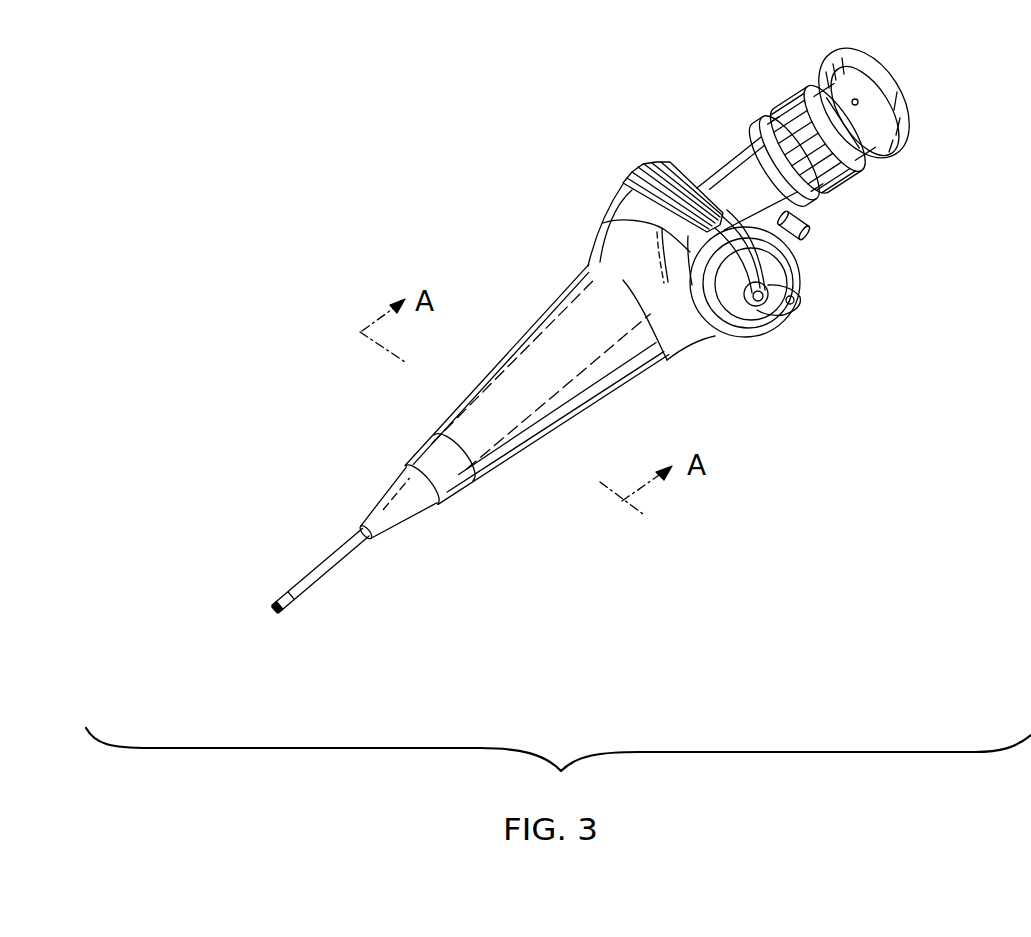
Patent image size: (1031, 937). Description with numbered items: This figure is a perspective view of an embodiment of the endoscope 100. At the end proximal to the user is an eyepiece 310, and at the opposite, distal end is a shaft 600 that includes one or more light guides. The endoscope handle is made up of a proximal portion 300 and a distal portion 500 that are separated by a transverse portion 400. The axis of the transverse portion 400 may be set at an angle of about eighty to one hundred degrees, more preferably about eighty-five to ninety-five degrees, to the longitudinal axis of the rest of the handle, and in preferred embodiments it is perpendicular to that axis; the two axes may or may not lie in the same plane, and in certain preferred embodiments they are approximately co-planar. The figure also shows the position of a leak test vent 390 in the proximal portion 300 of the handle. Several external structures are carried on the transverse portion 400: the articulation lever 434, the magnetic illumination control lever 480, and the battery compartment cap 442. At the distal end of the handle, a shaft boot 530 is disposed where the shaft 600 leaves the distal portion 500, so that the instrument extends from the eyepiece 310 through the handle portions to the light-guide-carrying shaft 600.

The endoscope 100 is at (305, 242).
The proximal portion 300 is at (714, 165).
The eyepiece 310 is at (908, 88).
The leak test vent 390 is at (814, 230).
The transverse portion 400 is at (604, 232).
The articulation lever 434 is at (759, 312).
The battery compartment cap 442 is at (622, 185).
The magnetic illumination control lever 480 is at (800, 304).
The distal portion 500 is at (562, 318).
The shaft boot 530 is at (380, 500).
The shaft 600 is at (312, 572).